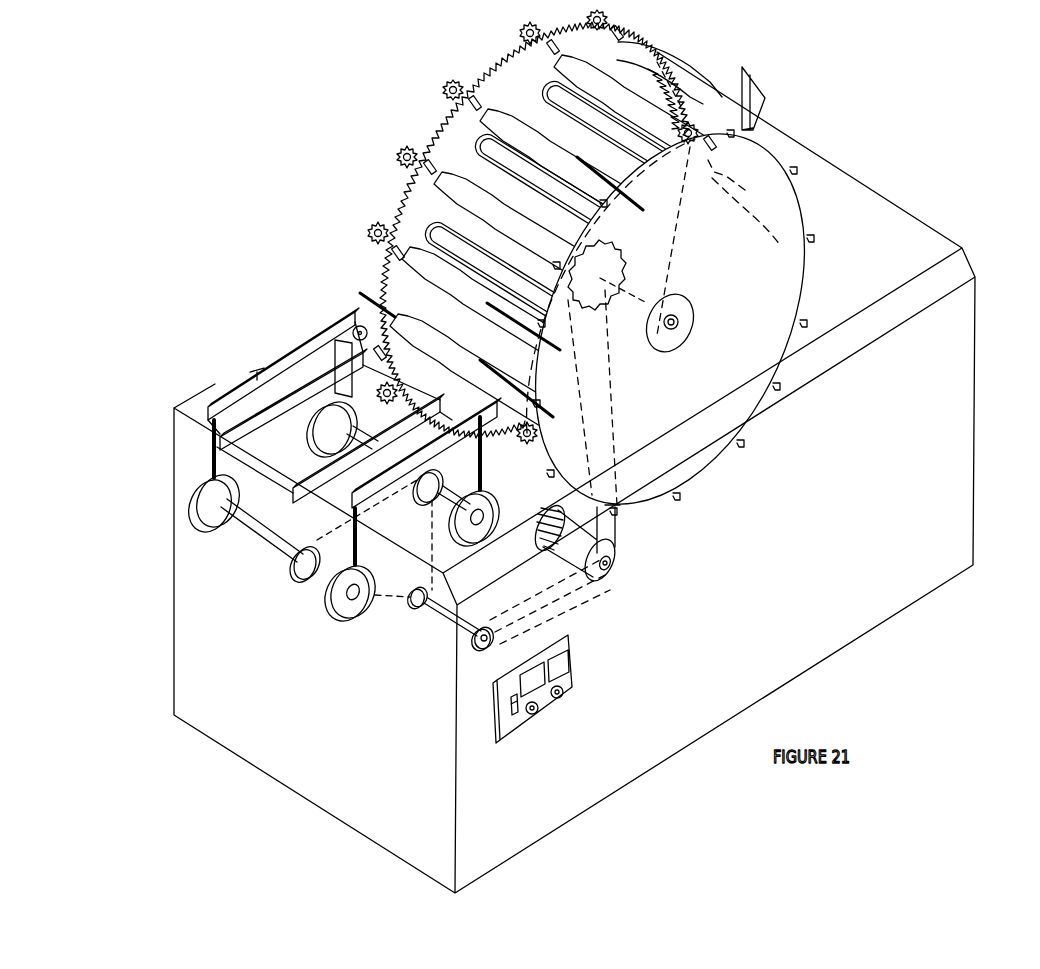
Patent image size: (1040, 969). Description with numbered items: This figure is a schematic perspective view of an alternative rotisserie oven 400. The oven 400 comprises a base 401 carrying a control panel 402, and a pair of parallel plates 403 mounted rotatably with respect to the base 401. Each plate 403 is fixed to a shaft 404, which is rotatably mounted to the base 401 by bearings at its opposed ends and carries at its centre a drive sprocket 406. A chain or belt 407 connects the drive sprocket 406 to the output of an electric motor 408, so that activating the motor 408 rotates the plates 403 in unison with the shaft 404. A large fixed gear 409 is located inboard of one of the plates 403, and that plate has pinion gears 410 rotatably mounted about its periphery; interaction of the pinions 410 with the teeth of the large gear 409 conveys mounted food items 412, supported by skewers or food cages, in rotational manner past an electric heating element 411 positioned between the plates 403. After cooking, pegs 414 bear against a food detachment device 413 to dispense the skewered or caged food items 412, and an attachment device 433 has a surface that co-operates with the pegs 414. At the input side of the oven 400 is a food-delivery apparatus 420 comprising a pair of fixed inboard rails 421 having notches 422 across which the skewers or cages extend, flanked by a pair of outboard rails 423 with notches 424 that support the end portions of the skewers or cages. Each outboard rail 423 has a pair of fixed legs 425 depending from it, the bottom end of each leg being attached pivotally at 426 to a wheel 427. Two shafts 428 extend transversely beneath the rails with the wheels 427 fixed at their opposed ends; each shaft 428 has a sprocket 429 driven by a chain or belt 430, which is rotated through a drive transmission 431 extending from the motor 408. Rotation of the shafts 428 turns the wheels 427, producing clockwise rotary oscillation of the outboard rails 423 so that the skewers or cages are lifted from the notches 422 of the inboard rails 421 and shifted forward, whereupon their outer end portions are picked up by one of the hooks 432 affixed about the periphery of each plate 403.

The rotisserie oven 400 is at (959, 140).
The base 401 is at (943, 457).
The control panel 402 is at (575, 686).
The plates 403 is at (427, 127).
The shaft 404 is at (630, 300).
The drive sprocket 406 is at (610, 258).
The chain or belt 407 is at (618, 428).
The electric motor 408 is at (572, 553).
The large fixed gear 409 is at (510, 77).
The pinion gears 410 is at (452, 83).
The electric heating element 411 is at (438, 235).
The food items 412 is at (652, 50).
The food detachment device 413 is at (755, 80).
The pegs 414 is at (620, 32).
The food-delivery apparatus 420 is at (234, 291).
The inboard rails 421 is at (310, 482).
The notches 422 is at (293, 397).
The outboard rails 423 is at (247, 388).
The notches 424 is at (257, 372).
The fixed legs 425 is at (483, 473).
The pivotal attachment 426 is at (487, 500).
The wheel 427 is at (477, 532).
The shafts 428 is at (362, 438).
The sprocket 429 is at (307, 547).
The chain or belt 430 is at (392, 603).
The drive transmission 431 is at (473, 647).
The hooks 432 is at (559, 414).
The attachment device 433 is at (337, 343).